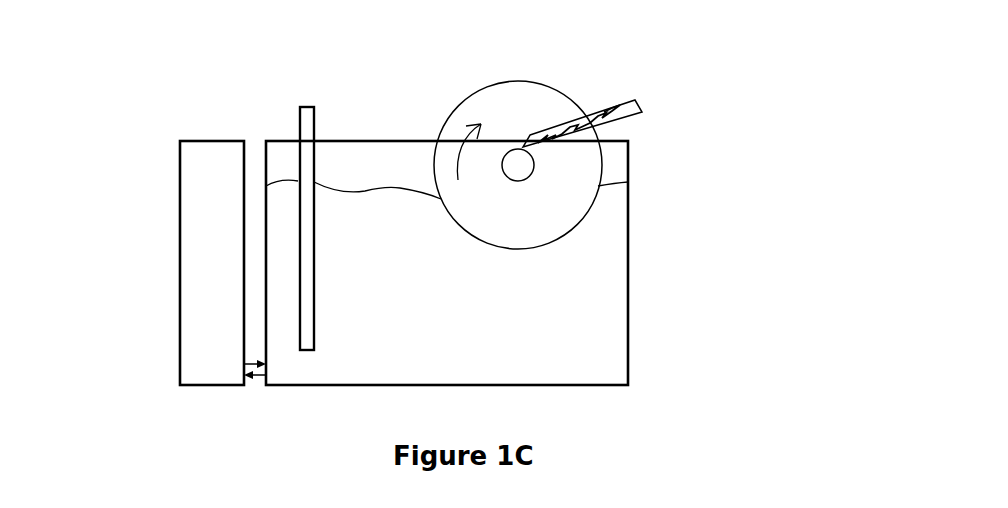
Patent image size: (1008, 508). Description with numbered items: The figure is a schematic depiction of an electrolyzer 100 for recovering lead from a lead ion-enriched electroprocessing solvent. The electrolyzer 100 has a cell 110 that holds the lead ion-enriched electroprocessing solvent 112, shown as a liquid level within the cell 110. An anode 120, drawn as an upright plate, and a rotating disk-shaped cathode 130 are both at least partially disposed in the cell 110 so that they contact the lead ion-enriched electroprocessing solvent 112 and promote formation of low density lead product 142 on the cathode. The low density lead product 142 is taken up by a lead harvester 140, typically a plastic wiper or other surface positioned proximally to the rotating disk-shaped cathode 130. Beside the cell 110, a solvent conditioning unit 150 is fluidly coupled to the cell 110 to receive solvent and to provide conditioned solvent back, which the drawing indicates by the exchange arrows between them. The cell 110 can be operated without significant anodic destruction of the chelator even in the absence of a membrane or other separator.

The electrolyzer 100 is at (238, 103).
The cell 110 is at (628, 276).
The lead ion-enriched electroprocessing solvent 112 is at (617, 212).
The anode 120 is at (313, 108).
The rotating disk-shaped cathode 130 is at (527, 87).
The lead harvester 140 is at (640, 104).
The low density lead product 142 is at (590, 110).
The solvent conditioning unit 150 is at (180, 272).